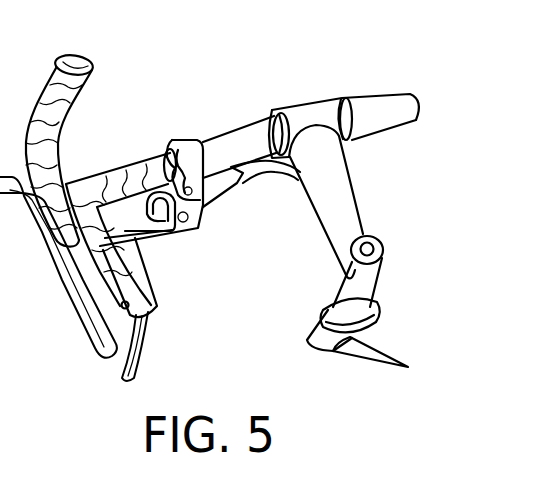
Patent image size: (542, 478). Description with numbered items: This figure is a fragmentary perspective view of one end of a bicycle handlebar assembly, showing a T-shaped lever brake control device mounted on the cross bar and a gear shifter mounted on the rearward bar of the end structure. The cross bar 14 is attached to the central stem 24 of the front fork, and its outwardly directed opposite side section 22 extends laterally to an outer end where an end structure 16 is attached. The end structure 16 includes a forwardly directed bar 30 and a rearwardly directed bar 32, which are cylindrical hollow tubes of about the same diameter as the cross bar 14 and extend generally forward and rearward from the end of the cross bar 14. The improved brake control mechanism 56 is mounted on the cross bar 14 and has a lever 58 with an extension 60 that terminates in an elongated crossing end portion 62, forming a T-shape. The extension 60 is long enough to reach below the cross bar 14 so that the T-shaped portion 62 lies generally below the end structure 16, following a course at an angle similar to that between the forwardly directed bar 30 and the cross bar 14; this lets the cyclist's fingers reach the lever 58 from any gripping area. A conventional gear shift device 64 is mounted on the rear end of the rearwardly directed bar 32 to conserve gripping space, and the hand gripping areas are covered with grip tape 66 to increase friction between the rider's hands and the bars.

The cross bar 14 is at (360, 98).
The end structure 16 is at (53, 60).
The outwardly directed opposite side section 22 is at (222, 140).
The central stem 24 is at (352, 184).
The forwardly directed bar 30 is at (67, 88).
The rearwardly directed bar 32 is at (120, 256).
The brake control mechanism 56 is at (214, 231).
The lever 58 is at (140, 222).
The extension 60 is at (115, 205).
The elongated crossing end portion 62 is at (60, 276).
The gear shift device 64 is at (150, 331).
The grip tape 66 is at (40, 103).